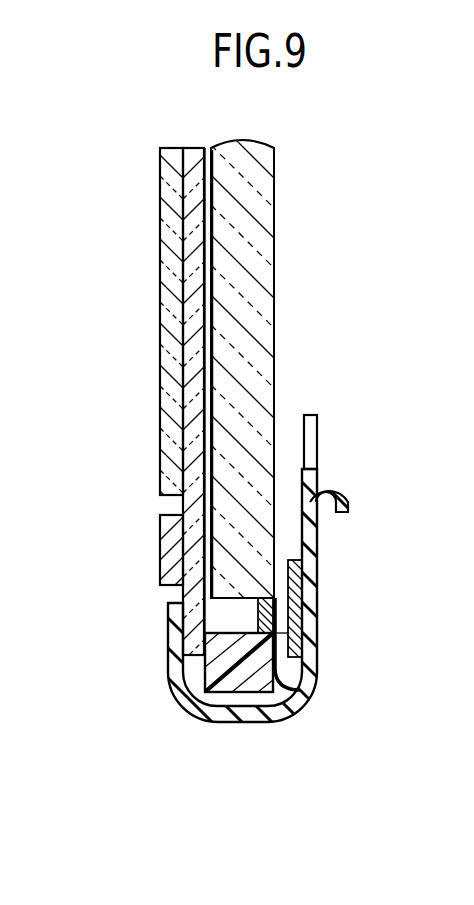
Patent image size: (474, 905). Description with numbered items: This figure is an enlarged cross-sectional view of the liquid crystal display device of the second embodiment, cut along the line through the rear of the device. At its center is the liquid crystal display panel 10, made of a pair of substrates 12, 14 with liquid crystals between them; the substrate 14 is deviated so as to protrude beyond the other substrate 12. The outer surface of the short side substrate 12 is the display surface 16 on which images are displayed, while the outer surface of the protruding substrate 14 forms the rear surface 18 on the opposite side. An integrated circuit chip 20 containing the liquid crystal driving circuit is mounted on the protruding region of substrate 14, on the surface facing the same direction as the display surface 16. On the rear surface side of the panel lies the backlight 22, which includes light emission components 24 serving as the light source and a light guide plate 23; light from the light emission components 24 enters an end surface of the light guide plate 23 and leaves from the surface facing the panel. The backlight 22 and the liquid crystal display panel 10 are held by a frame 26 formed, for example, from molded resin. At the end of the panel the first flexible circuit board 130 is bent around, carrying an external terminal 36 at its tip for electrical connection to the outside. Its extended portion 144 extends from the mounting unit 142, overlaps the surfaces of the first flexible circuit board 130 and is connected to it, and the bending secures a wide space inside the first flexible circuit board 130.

The liquid crystal display panel 10 is at (146, 232).
The substrate 12 is at (173, 418).
The substrate 14 is at (193, 473).
The display surface 16 is at (160, 356).
The rear surface 18 is at (209, 316).
The integrated circuit chip 20 is at (160, 552).
The backlight 22 is at (409, 358).
The light guide plate 23 is at (275, 377).
The light emission component 24 is at (268, 597).
The frame 26 is at (230, 692).
The external terminal 36 is at (318, 457).
The first flexible circuit board 130 is at (318, 598).
The mounting unit 142 is at (296, 640).
The extended portion 144 is at (344, 505).